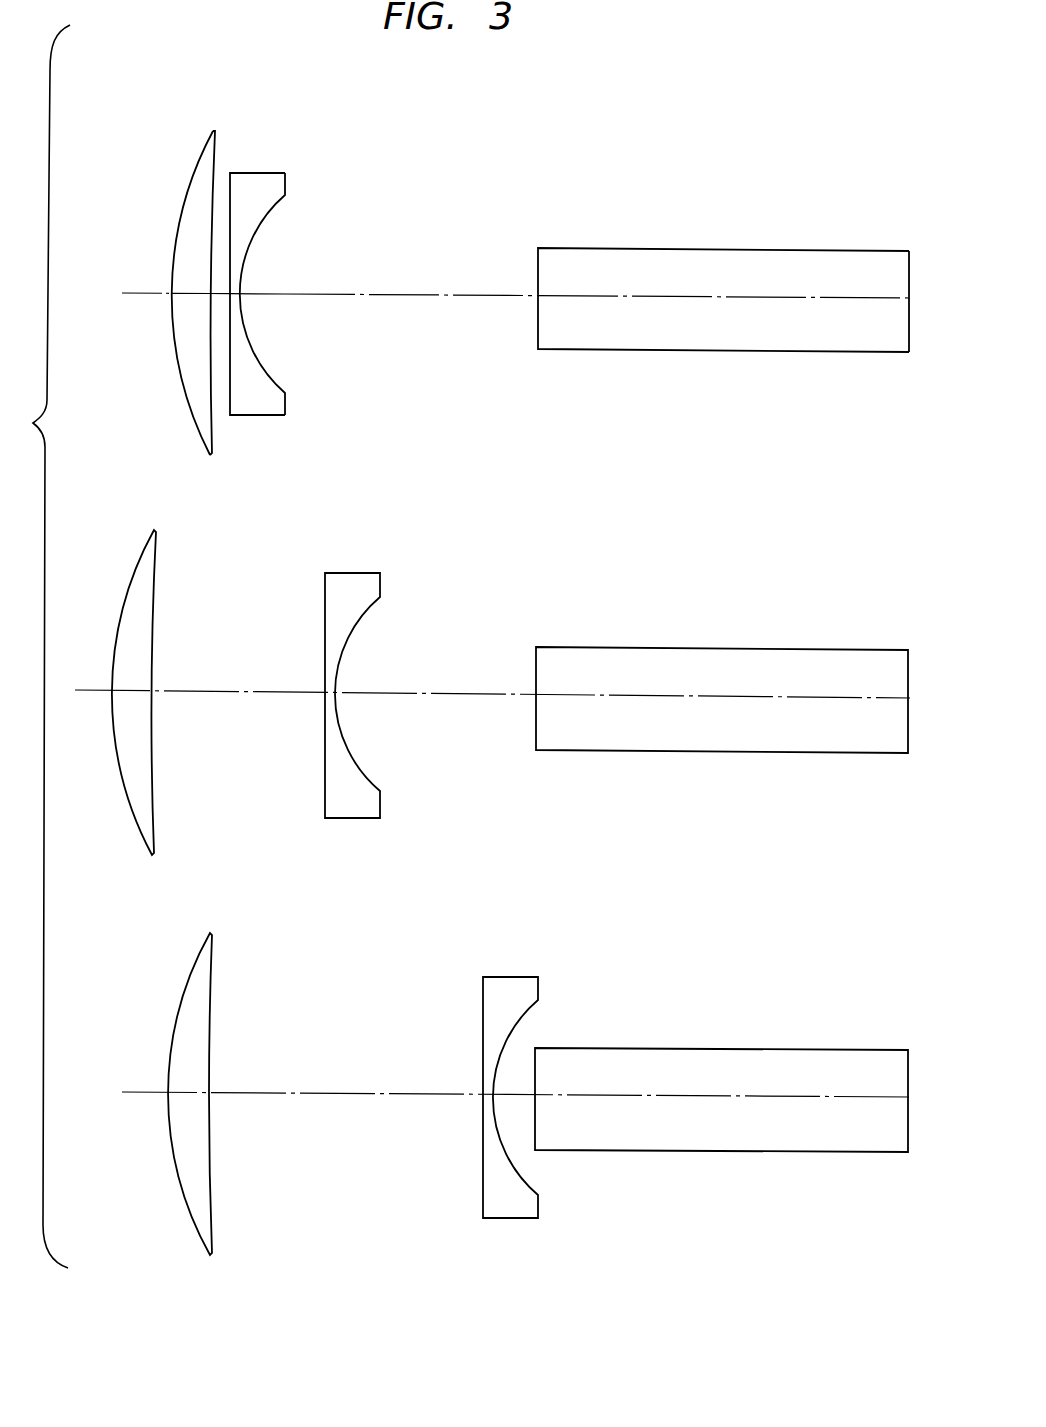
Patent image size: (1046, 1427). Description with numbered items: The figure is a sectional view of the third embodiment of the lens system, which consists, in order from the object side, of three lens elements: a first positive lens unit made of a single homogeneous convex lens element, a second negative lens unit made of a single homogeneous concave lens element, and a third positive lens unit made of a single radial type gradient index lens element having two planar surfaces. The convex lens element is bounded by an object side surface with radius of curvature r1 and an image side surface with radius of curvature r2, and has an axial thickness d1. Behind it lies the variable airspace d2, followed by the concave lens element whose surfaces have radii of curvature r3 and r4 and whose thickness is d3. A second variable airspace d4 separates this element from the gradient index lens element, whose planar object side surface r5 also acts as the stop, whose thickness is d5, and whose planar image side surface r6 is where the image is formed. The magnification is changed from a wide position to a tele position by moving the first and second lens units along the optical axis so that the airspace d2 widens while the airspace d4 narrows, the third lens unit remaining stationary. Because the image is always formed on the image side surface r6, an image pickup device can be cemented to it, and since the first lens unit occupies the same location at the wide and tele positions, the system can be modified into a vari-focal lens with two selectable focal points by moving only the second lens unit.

The radius of curvature of object side surface of first lens element r1 is at (198, 160).
The radius of curvature of image side surface of first lens element r2 is at (215, 172).
The radius of curvature of object side surface of second lens element r3 is at (231, 200).
The radius of curvature of image side surface of second lens element r4 is at (277, 212).
The object side planar surface of gradient index lens element (stop) r5 is at (538, 256).
The image side planar surface of gradient index lens element r6 is at (909, 267).
The thickness of first lens element d1 is at (187, 298).
The variable airspace between first and second lens units d2 is at (220, 297).
The thickness of second lens element d3 is at (235, 298).
The variable airspace between second and third lens units d4 is at (380, 296).
The thickness of gradient index lens element d5 is at (667, 300).